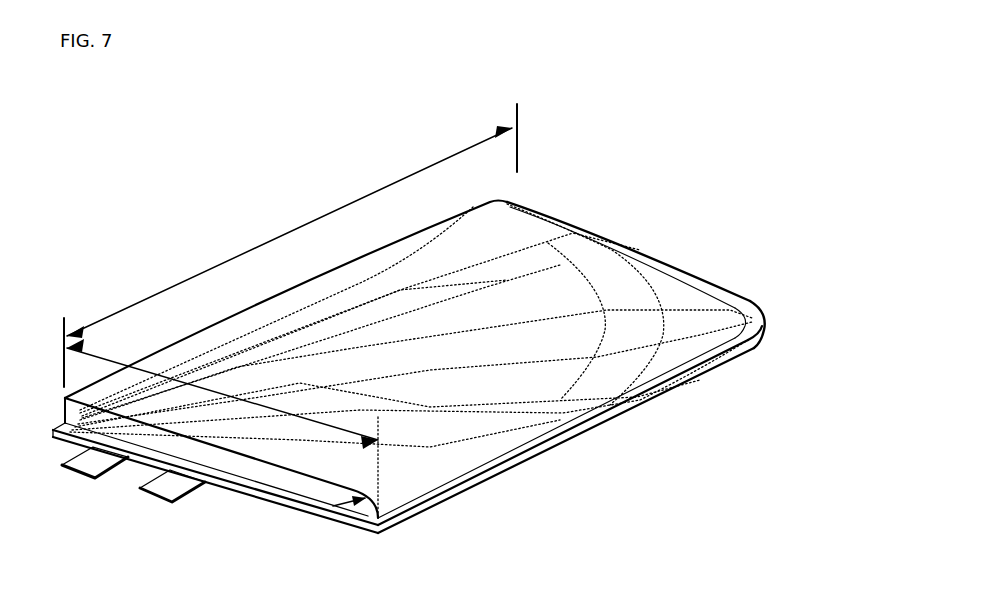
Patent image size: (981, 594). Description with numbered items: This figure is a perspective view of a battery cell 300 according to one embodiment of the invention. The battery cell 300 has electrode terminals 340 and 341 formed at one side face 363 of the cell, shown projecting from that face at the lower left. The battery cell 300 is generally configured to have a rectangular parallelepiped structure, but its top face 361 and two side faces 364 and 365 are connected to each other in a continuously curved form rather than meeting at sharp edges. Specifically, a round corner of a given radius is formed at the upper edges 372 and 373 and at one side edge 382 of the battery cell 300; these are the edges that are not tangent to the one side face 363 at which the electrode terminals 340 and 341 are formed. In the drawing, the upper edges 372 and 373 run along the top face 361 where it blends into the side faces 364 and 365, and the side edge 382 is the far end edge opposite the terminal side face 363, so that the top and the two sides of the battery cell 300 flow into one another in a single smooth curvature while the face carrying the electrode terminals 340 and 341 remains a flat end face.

The battery cell 300 is at (170, 219).
The electrode terminal 340 is at (83, 470).
The electrode terminal 341 is at (158, 490).
The top face 361 is at (415, 352).
The side face 363 is at (250, 472).
The side face 364 is at (597, 410).
The side face 365 is at (670, 257).
The upper edge 372 is at (637, 365).
The upper edge 373 is at (600, 240).
The side edge 382 is at (764, 324).